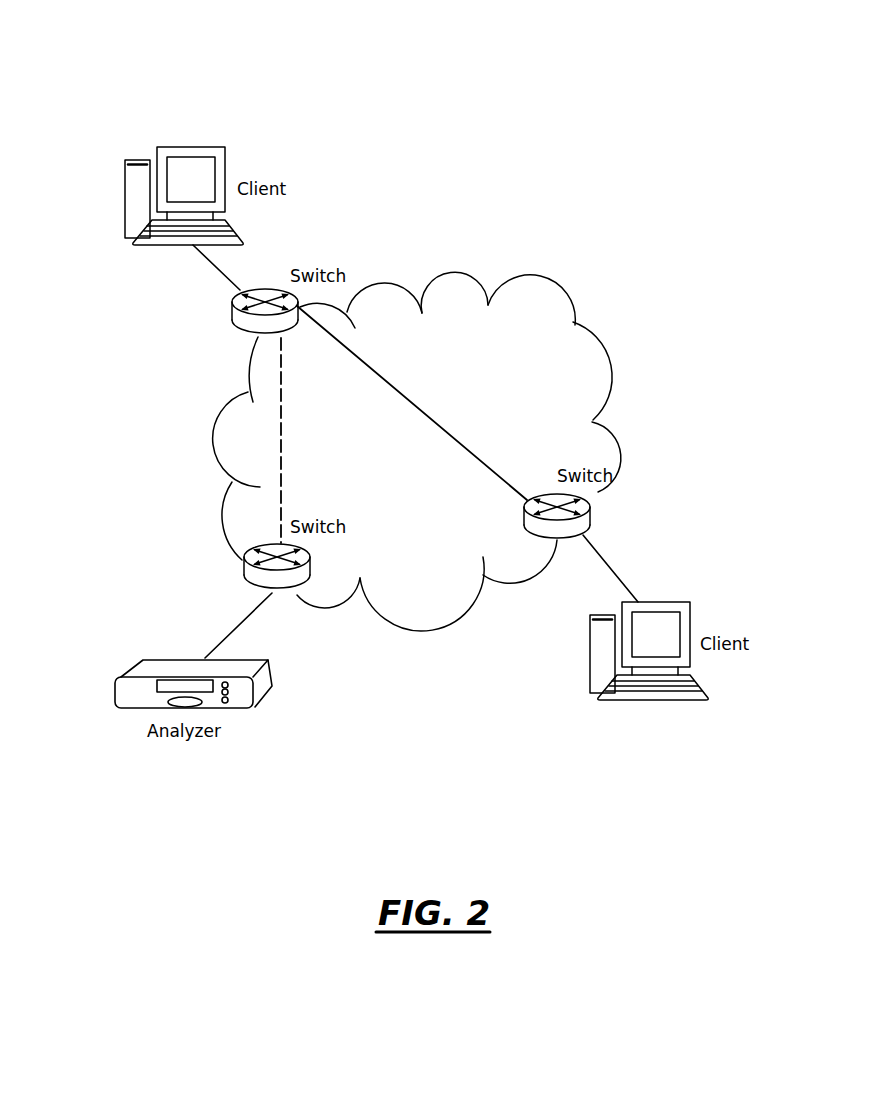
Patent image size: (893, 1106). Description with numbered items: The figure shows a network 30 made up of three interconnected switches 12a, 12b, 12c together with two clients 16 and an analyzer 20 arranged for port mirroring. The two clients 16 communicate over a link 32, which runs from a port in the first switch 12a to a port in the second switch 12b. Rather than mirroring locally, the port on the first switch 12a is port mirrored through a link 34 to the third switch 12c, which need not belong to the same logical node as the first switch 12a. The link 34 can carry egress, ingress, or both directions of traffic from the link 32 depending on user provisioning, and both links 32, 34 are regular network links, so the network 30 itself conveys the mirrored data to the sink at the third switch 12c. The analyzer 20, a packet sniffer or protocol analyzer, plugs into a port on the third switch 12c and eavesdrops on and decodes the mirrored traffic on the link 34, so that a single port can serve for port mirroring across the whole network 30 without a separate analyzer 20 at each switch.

The network 30 is at (418, 102).
The client 16 is at (138, 160).
The first switch 12a is at (235, 328).
The second switch 12b is at (592, 520).
The third switch 12c is at (243, 565).
The link 32 is at (413, 408).
The link 34 is at (282, 448).
The analyzer 20 is at (265, 692).